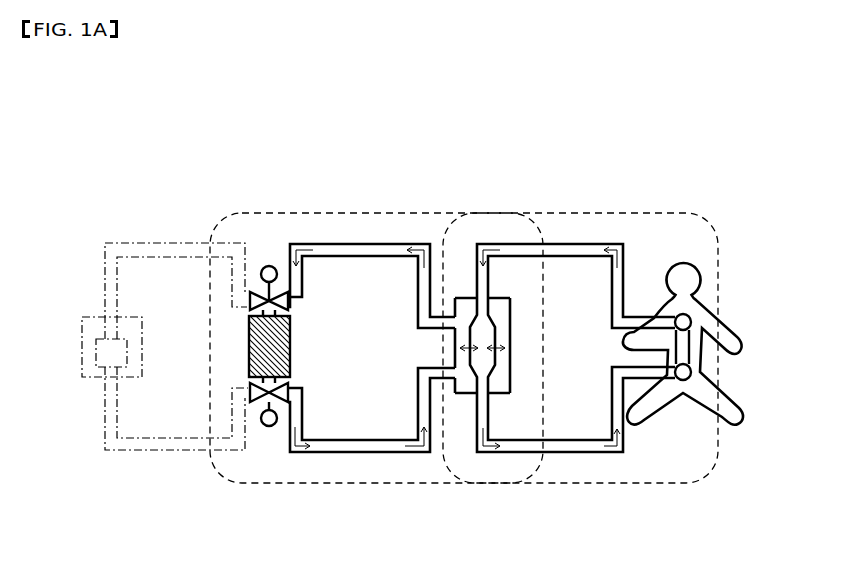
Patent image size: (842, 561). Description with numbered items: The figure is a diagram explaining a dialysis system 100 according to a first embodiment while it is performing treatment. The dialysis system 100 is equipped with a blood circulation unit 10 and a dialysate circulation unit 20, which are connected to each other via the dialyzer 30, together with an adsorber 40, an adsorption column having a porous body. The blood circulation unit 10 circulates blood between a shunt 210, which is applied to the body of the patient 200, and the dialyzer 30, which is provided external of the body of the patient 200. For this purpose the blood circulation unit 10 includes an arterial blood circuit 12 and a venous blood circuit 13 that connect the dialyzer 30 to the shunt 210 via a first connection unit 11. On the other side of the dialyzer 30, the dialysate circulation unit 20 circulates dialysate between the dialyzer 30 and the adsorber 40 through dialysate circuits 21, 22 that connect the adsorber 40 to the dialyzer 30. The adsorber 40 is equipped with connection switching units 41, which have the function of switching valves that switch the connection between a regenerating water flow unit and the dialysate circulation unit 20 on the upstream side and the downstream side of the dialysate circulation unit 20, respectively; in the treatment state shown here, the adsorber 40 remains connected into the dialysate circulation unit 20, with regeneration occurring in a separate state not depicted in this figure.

The dialysis system 100 is at (200, 122).
The blood circulation unit 10 is at (681, 213).
The first connection unit 11 is at (692, 320).
The arterial blood circuit 12 is at (586, 245).
The venous blood circuit 13 is at (597, 453).
The dialysate circulation unit 20 is at (332, 215).
The dialysate circuit 21 is at (407, 246).
The dialysate circuit 22 is at (393, 453).
The dialyzer 30 is at (463, 298).
The adsorber 40 is at (260, 347).
The connection switching unit 41 is at (256, 296).
The patient 200 is at (708, 310).
The shunt 210 is at (692, 350).